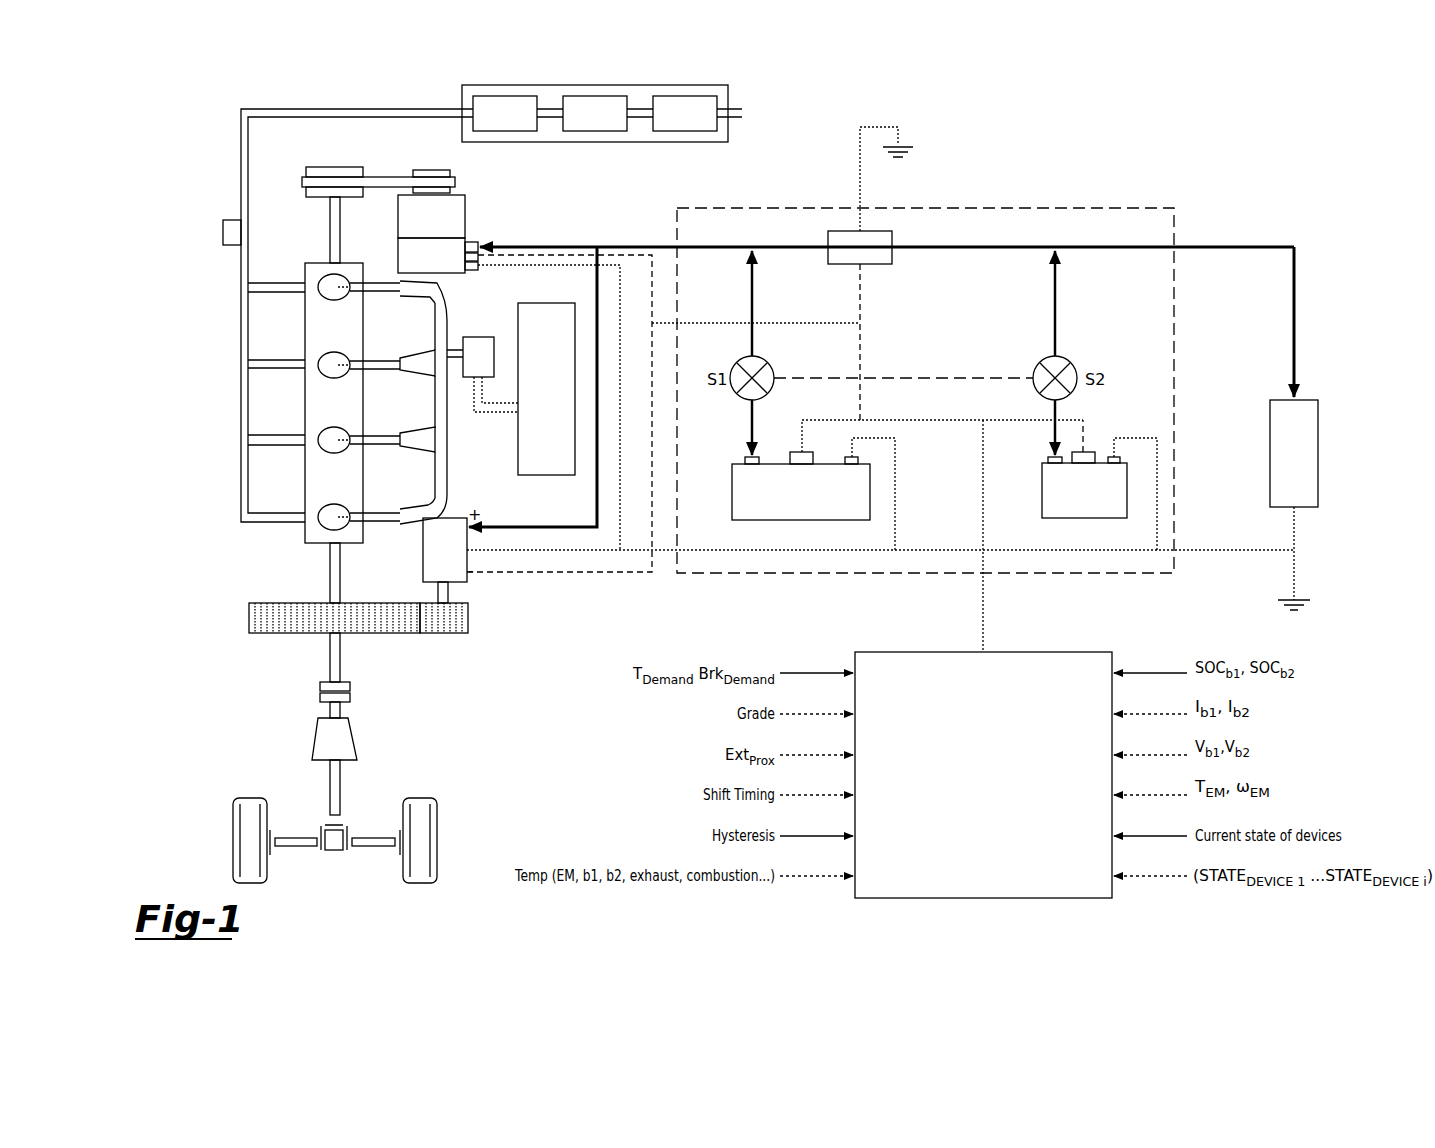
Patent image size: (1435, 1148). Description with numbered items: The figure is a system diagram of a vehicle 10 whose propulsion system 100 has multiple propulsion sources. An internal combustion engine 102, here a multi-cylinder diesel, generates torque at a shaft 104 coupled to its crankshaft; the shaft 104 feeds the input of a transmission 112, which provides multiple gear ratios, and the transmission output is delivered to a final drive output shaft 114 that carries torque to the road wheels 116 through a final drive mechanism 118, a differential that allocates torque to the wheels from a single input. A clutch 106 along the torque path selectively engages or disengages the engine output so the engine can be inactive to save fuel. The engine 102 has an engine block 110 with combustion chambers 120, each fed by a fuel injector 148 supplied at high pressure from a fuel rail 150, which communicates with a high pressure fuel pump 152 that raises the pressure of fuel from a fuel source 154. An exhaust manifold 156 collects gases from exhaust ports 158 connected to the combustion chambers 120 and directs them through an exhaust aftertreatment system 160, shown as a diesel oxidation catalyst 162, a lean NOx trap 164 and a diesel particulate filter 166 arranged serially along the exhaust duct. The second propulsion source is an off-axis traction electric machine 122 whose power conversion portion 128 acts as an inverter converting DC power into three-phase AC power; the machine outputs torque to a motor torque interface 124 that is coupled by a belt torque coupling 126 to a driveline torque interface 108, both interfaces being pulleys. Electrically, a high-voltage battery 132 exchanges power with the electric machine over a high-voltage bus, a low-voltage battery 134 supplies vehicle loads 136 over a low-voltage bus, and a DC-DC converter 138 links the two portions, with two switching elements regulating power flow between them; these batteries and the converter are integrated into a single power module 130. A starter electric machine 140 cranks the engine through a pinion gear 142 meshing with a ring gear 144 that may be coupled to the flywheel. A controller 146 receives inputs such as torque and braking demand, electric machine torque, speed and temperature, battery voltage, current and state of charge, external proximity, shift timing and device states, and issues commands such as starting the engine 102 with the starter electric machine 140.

The vehicle 10 is at (1175, 133).
The propulsion system 100 is at (577, 233).
The internal combustion engine 102 is at (320, 333).
The shaft 104 is at (330, 576).
The clutch 106 is at (350, 689).
The driveline torque interface 108 is at (338, 167).
The engine block 110 is at (352, 545).
The transmission 112 is at (356, 742).
The final drive output shaft 114 is at (342, 790).
The road wheels 116 is at (233, 841).
The final drive mechanism 118 is at (335, 852).
The combustion chambers 120 is at (330, 278).
The traction electric machine 122 is at (420, 222).
The motor torque interface 124 is at (432, 170).
The torque coupling 126 is at (394, 177).
The power conversion portion 128 is at (420, 265).
The power module 130 is at (1090, 207).
The high-voltage battery 132 is at (732, 488).
The low-voltage battery 134 is at (1042, 487).
The vehicle loads 136 is at (1270, 452).
The DC-DC converter 138 is at (840, 264).
The starter electric machine 140 is at (423, 547).
The pinion gear 142 is at (468, 617).
The ring gear 144 is at (249, 617).
The controller 146 is at (970, 747).
The fuel injector 148 is at (386, 283).
The fuel rail 150 is at (447, 462).
The high pressure fuel pump 152 is at (468, 367).
The fuel source 154 is at (535, 386).
The exhaust manifold 156 is at (223, 232).
The exhaust ports 158 is at (318, 296).
The exhaust aftertreatment system 160 is at (491, 303).
The diesel oxidation catalyst 162 is at (505, 131).
The lean NOx trap 164 is at (595, 131).
The diesel particulate filter 166 is at (685, 131).